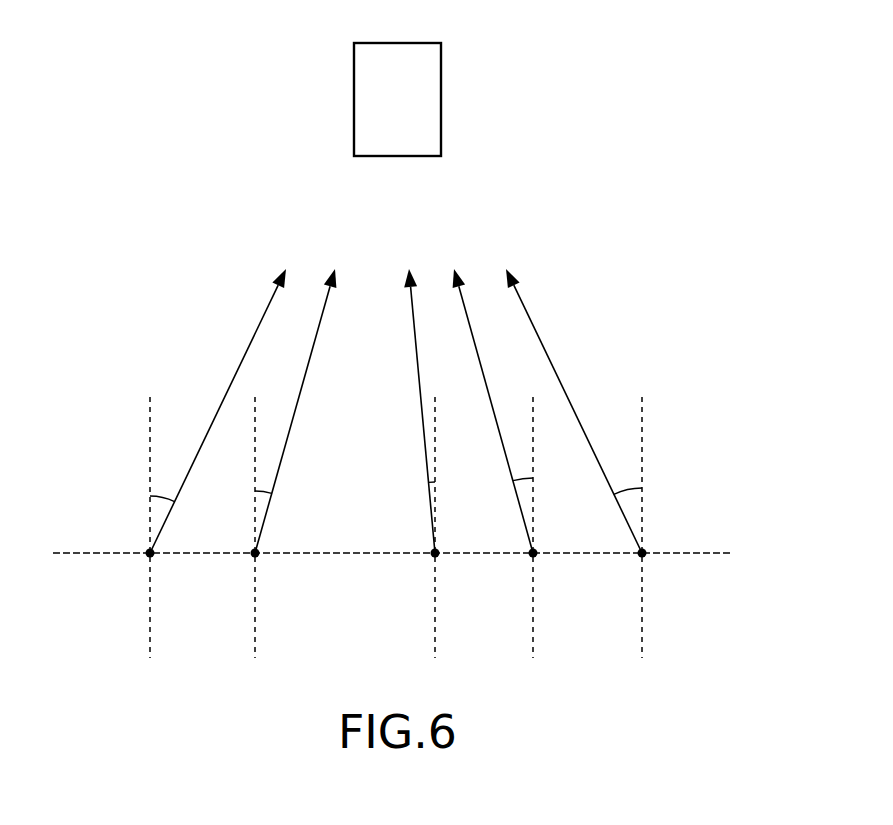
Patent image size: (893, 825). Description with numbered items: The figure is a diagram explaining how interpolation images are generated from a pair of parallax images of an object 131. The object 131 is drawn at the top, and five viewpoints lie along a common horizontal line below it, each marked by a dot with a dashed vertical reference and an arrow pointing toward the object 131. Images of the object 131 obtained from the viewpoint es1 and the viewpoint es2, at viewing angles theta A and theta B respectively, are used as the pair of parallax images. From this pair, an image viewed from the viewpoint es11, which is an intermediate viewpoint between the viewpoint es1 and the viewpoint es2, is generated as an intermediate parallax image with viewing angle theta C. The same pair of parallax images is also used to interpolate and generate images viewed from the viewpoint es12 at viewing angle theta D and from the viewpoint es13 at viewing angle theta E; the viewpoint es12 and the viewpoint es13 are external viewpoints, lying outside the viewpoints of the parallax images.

The object 131 is at (413, 157).
The viewpoint es12 is at (150, 553).
The viewpoint es1 is at (255, 553).
The viewpoint es11 is at (435, 553).
The viewpoint es2 is at (533, 553).
The viewpoint es13 is at (642, 553).